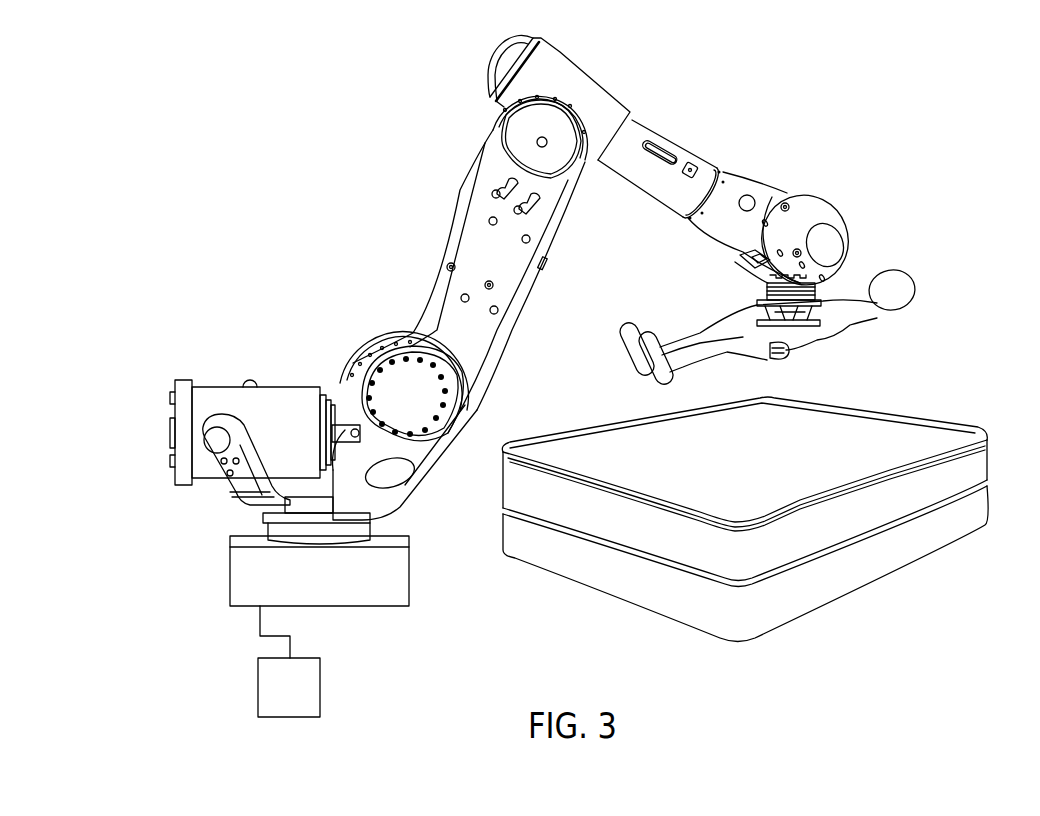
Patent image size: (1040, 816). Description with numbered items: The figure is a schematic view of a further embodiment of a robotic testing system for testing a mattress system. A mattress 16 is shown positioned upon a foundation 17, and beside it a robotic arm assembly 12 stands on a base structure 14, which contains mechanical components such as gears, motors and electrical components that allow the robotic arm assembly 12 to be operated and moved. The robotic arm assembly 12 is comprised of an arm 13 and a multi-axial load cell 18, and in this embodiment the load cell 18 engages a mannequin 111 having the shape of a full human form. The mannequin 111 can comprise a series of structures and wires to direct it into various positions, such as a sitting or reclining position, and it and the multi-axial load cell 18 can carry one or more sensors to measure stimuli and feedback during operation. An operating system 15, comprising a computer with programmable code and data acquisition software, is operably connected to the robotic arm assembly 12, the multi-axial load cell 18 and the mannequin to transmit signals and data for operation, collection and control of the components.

The robotic arm assembly 12 is at (406, 250).
The arm 13 is at (801, 214).
The base structure 14 is at (377, 596).
The operating system 15 is at (306, 690).
The mattress 16 is at (975, 460).
The foundation 17 is at (975, 512).
The multi-axial load cell 18 is at (832, 288).
The mannequin 111 is at (935, 284).